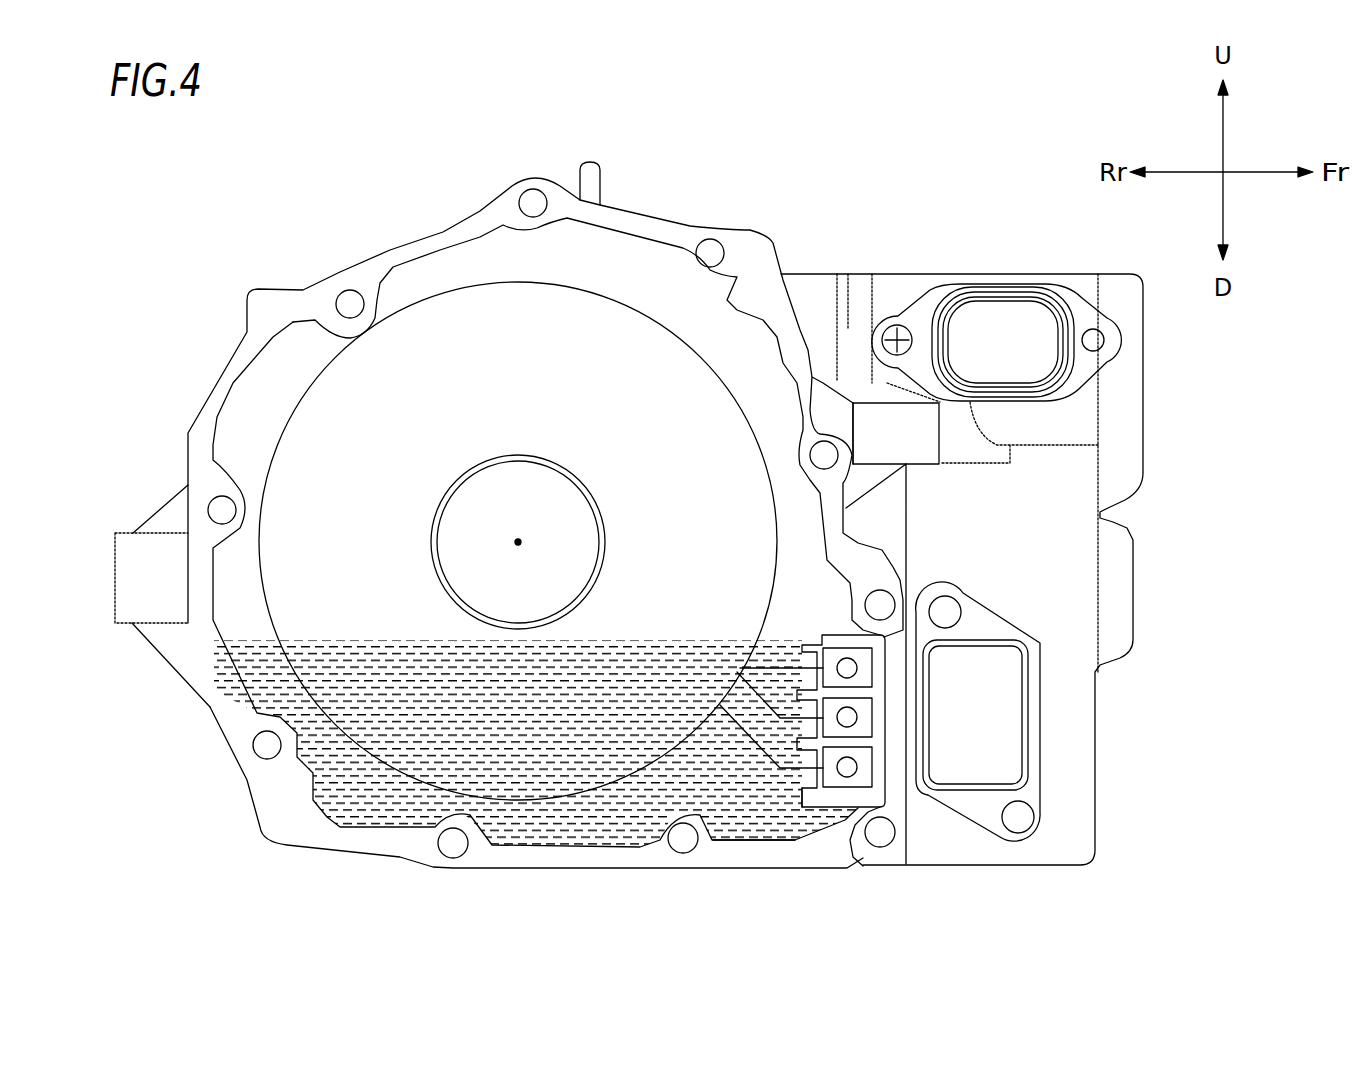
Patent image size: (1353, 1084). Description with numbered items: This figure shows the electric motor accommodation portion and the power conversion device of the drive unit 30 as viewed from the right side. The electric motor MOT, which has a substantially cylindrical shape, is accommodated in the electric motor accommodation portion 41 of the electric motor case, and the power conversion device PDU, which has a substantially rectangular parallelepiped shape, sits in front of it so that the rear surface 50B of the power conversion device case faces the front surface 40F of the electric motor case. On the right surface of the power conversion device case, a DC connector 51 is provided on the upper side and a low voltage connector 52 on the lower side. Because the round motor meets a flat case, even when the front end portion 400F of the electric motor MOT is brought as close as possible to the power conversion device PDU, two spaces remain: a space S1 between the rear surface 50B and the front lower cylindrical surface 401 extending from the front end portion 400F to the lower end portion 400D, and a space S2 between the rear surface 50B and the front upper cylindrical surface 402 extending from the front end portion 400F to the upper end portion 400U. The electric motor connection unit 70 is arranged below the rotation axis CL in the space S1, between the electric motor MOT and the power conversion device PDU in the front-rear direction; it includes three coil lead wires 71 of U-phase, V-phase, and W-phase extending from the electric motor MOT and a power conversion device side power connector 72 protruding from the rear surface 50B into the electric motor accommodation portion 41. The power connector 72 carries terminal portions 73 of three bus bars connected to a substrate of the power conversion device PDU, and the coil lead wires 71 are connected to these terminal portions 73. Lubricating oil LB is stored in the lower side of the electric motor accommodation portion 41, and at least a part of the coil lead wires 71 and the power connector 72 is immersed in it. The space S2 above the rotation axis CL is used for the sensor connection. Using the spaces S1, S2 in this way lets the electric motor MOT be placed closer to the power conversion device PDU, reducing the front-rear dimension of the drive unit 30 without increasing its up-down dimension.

The drive unit 30 is at (867, 198).
The electric motor MOT is at (300, 402).
The rotation axis CL is at (520, 540).
The front upper cylindrical surface 402 is at (637, 313).
The upper end portion 400U is at (513, 283).
The lower end portion 400D is at (512, 800).
The front end portion 400F is at (776, 542).
The front lower cylindrical surface 401 is at (697, 733).
The electric motor accommodation portion 41 is at (223, 607).
The space S1 is at (727, 733).
The space S2 is at (770, 347).
The lubricating oil LB is at (370, 815).
The power conversion device PDU is at (1073, 555).
The DC connector 51 is at (999, 317).
The low voltage connector 52 is at (1003, 745).
The rear surface 50B is at (895, 660).
The front surface 40F is at (920, 702).
The electric motor connection unit 70 is at (809, 798).
The coil lead wires 71 is at (766, 772).
The power conversion device side power connector 72 is at (852, 798).
The terminal portions 73 is at (863, 772).